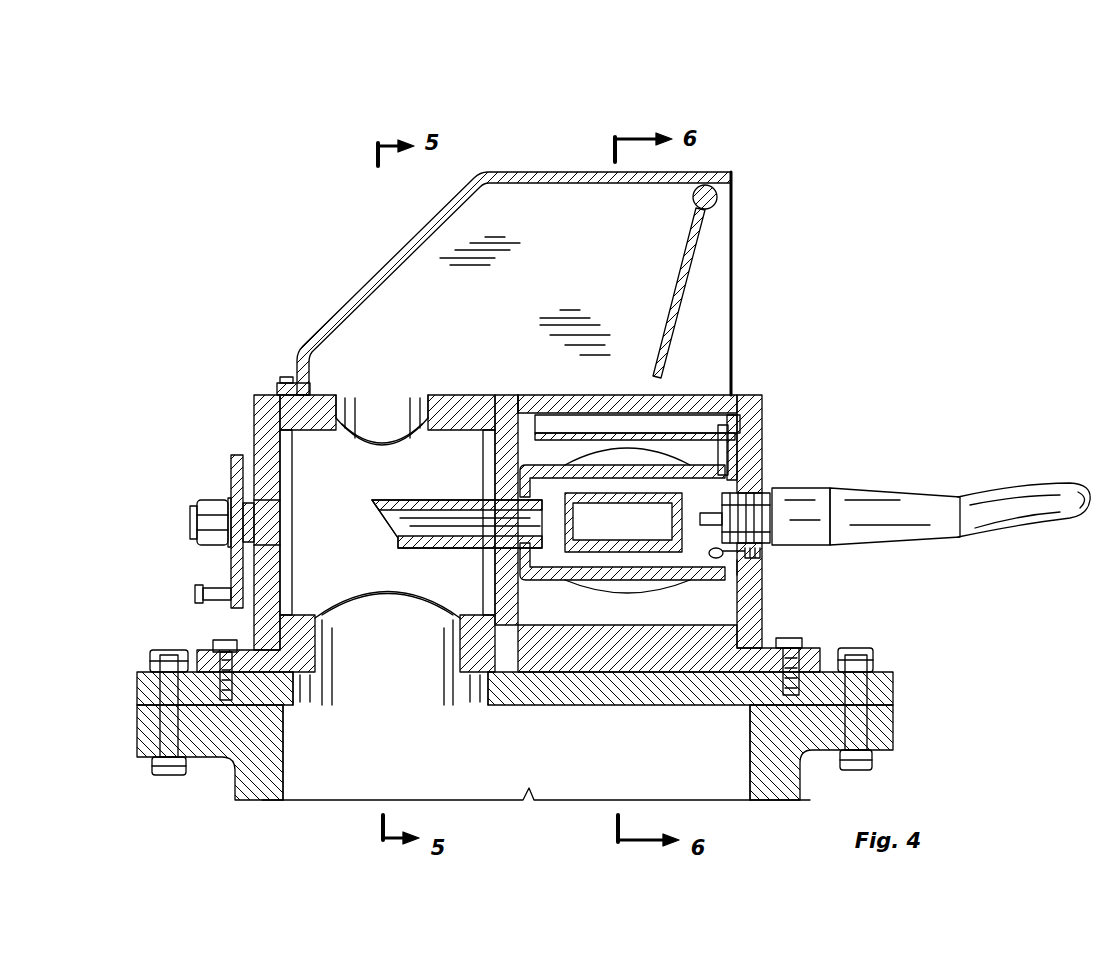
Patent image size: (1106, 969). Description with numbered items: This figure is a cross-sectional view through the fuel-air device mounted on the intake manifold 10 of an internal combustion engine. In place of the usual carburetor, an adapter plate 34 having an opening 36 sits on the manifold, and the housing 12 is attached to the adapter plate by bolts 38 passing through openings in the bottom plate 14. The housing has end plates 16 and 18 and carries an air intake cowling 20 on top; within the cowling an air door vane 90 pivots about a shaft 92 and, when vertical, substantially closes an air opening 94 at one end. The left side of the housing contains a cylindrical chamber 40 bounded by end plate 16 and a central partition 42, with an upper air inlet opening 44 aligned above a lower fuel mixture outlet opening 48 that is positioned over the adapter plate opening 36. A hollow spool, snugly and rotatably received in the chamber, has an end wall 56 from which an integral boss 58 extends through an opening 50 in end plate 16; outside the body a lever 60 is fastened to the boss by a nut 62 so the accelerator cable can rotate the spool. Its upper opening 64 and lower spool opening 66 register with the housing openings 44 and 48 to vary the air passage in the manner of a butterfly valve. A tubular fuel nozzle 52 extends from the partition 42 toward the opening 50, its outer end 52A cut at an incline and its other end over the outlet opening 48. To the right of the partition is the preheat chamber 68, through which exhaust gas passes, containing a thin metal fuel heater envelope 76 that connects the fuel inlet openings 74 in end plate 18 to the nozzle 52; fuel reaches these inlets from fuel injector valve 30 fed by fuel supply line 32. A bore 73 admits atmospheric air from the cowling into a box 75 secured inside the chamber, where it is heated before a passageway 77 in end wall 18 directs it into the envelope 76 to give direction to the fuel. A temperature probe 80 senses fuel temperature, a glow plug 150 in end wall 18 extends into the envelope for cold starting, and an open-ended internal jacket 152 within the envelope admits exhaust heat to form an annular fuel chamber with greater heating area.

The intake manifold 10 is at (895, 725).
The housing 12 is at (722, 395).
The bottom plate 14 is at (632, 640).
The end plate 16 is at (254, 405).
The end plate 18 is at (762, 412).
The air intake cowling 20 is at (583, 172).
The fuel injector valve 30 is at (880, 500).
The fuel supply line 32 is at (1012, 492).
The adapter plate 34 is at (895, 688).
The opening 36 is at (470, 705).
The bolts 38 is at (222, 650).
The cylindrical chamber 40 is at (484, 395).
The partition 42 is at (521, 395).
The upper air inlet opening 44 is at (432, 395).
The lower fuel mixture outlet opening 48 is at (390, 688).
The opening 50 is at (285, 510).
The tubular fuel nozzle 52 is at (432, 498).
The outer end 52A is at (397, 541).
The end wall 56 is at (280, 440).
The boss portion 58 is at (270, 530).
The lever 60 is at (231, 578).
The nut 62 is at (212, 500).
The upper opening 64 is at (390, 425).
The lower spool opening 66 is at (398, 590).
The preheat chamber 68 is at (685, 606).
The bore 73 is at (548, 410).
The fuel inlet openings 74 is at (770, 553).
The box 75 is at (632, 425).
The fuel heater envelope 76 is at (528, 578).
The passageway 77 is at (748, 455).
The temperature probe 80 is at (735, 495).
The air door vane 90 is at (686, 243).
The shaft 92 is at (718, 198).
The air opening 94 is at (733, 246).
The glow plug 150 is at (760, 575).
The internal jacket 152 is at (672, 520).